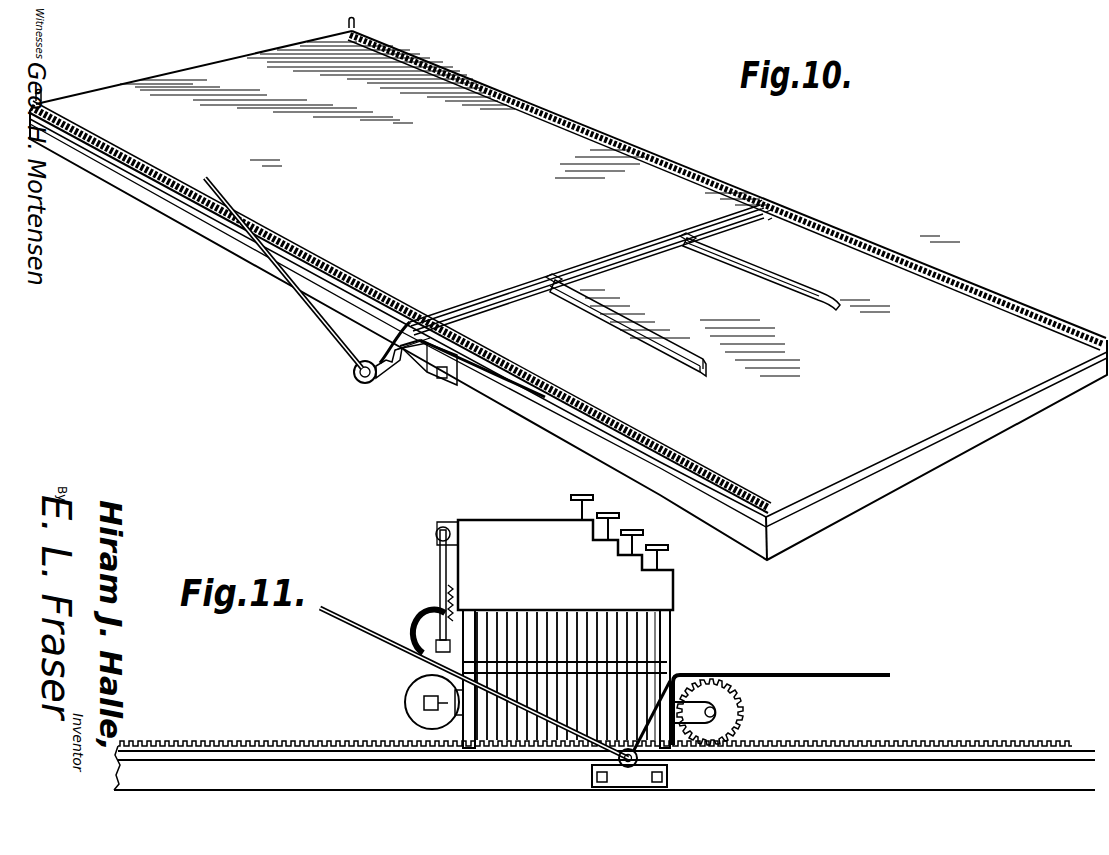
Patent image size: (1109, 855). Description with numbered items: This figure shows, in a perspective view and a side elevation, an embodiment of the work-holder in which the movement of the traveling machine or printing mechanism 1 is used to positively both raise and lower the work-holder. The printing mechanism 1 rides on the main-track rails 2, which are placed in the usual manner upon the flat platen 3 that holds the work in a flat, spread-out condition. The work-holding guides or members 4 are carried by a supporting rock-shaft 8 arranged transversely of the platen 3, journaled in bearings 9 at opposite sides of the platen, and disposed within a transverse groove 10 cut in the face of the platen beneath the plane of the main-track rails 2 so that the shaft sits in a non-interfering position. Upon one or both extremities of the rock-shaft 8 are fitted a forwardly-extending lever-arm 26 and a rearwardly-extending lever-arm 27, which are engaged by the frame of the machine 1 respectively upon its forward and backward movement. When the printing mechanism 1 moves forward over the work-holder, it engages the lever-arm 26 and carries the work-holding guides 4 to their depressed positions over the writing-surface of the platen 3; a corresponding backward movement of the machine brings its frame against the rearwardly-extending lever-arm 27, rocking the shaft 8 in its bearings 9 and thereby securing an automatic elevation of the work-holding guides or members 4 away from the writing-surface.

In FIG. 11, the traveling machine or printing mechanism 1 is at (539, 621).
In FIG. 10, the main-track rails 2 is at (153, 164).
In FIG. 11, the main-track rails 2 is at (286, 743).
In FIG. 10, the flat platen 3 is at (568, 289).
In FIG. 10, the work-holding guides or members 4 is at (645, 330).
In FIG. 10, the supporting rock-shaft 8 is at (496, 317).
In FIG. 11, the supporting rock-shaft 8 is at (626, 766).
In FIG. 10, the bearings 9 is at (428, 357).
In FIG. 11, the bearings 9 is at (670, 768).
In FIG. 10, the transverse groove 10 is at (600, 268).
In FIG. 10, the forwardly-extending lever-arm 26 is at (505, 368).
In FIG. 11, the forwardly-extending lever-arm 26 is at (806, 677).
In FIG. 10, the rearwardly-extending lever-arm 27 is at (283, 270).
In FIG. 11, the rearwardly-extending lever-arm 27 is at (361, 630).